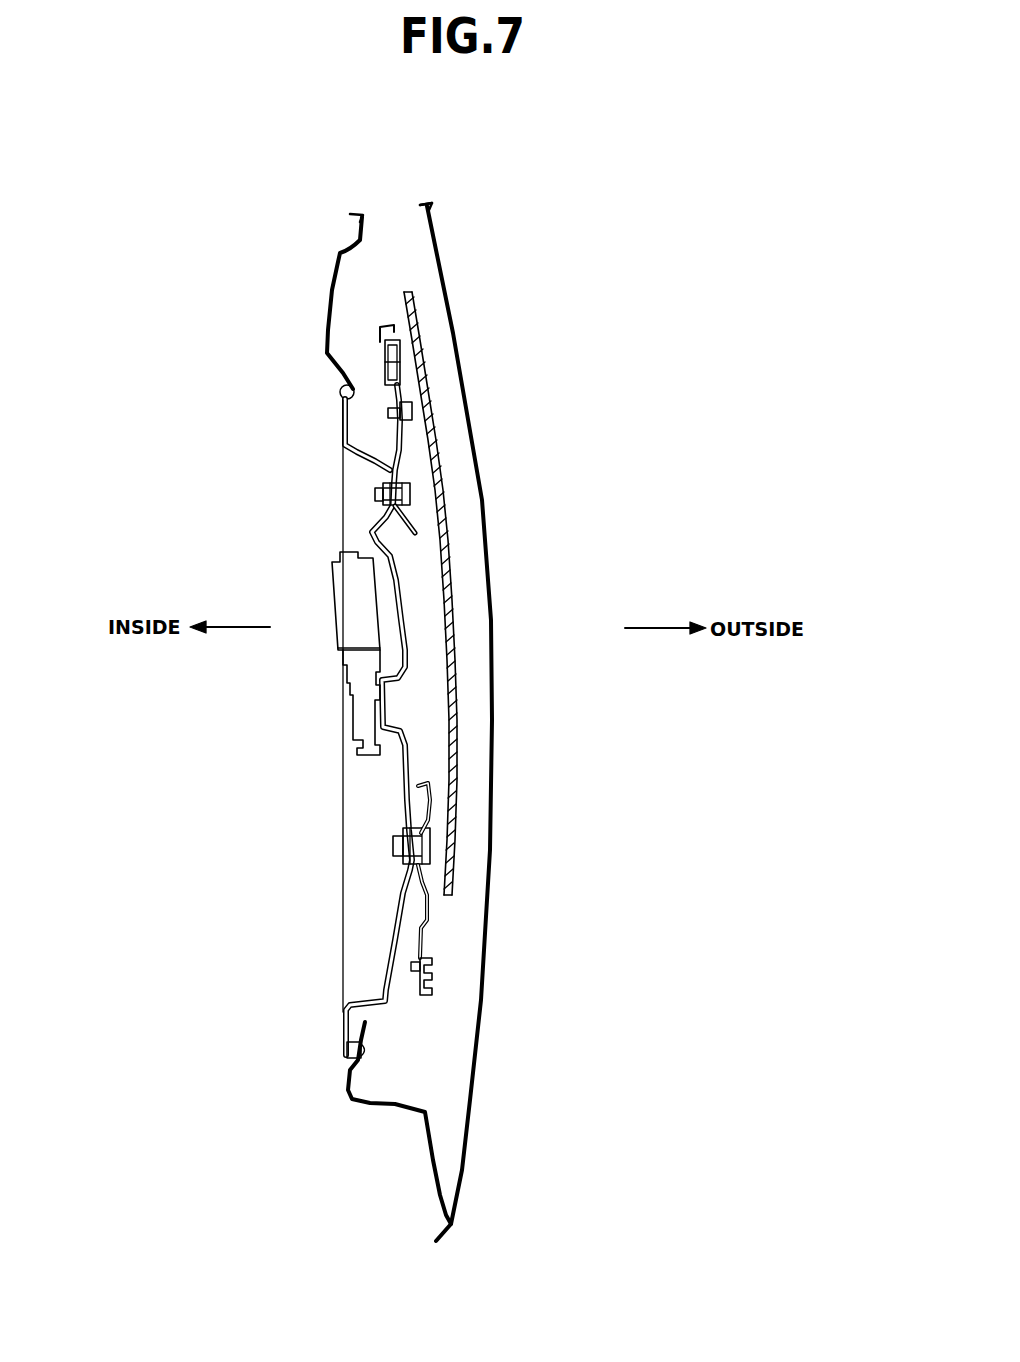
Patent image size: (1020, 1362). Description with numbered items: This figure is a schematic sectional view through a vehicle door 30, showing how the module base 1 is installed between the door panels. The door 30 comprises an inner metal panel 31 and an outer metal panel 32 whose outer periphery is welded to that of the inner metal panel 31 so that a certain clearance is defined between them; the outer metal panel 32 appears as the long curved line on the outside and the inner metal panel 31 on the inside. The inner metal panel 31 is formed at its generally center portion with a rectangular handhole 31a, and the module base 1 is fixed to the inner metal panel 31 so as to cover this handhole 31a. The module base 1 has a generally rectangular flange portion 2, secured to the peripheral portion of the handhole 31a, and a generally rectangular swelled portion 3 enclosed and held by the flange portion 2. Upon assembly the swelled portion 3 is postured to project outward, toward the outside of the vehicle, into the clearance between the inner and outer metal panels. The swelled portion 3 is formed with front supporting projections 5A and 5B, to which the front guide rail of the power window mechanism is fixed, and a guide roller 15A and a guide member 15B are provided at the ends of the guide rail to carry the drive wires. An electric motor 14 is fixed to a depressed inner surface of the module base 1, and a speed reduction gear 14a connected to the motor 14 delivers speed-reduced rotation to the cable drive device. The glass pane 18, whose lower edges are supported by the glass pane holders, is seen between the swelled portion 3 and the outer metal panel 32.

The door 30 is at (442, 229).
The inner metal panel 31 is at (330, 338).
The handhole 31a is at (343, 437).
The electric motor 14 is at (333, 580).
The speed reduction gear 14a is at (345, 704).
The module base 1 is at (341, 768).
The flange portion 2 is at (345, 1022).
The swelled portion 3 is at (405, 650).
The glass pane 18 is at (452, 600).
The outer metal panel 32 is at (490, 762).
The front supporting projection 5A is at (388, 472).
The guide roller 15A is at (386, 335).
The front supporting projection 5B is at (421, 875).
The guide member 15B is at (430, 990).